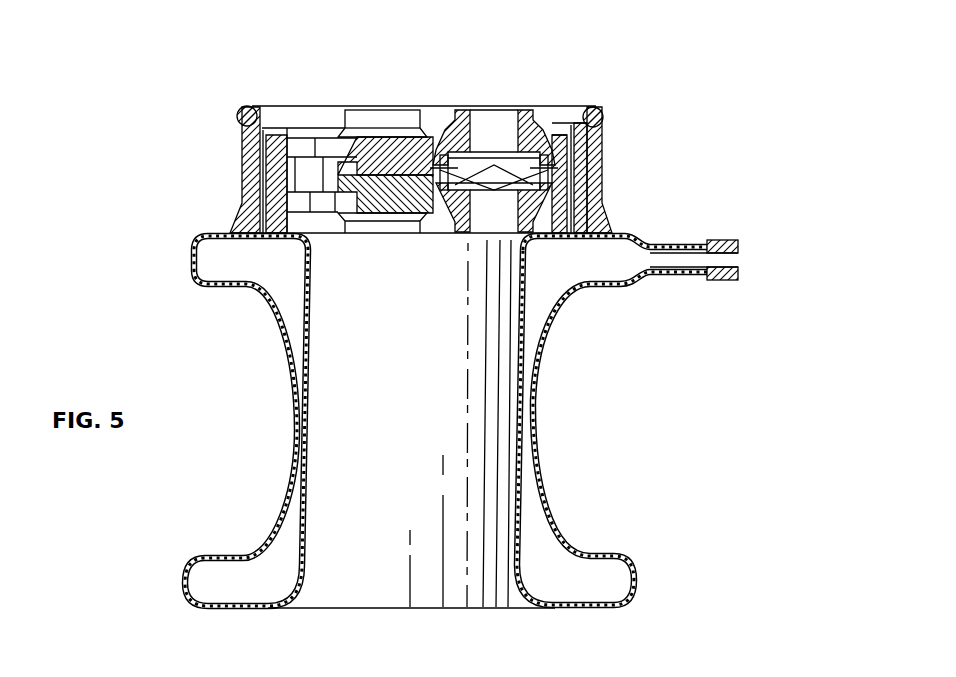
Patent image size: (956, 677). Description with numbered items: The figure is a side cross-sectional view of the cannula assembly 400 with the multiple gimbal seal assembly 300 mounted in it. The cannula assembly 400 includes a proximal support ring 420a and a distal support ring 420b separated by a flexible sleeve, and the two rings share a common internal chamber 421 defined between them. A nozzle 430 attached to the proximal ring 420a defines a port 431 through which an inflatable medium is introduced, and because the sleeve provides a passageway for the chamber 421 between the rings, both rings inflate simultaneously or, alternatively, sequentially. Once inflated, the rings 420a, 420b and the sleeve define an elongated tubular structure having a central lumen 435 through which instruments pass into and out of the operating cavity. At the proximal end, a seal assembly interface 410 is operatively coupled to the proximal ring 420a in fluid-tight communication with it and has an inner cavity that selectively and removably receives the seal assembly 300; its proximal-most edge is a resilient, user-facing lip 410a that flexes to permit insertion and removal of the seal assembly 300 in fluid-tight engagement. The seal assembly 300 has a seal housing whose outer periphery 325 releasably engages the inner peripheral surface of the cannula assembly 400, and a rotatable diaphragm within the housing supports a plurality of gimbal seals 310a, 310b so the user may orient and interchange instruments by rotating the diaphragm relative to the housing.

The multiple gimbal seal assembly 300 is at (504, 100).
The gimbal seal 310a is at (528, 110).
The gimbal seal 310b is at (397, 110).
The outer periphery 325 is at (600, 166).
The cannula assembly 400 is at (695, 100).
The seal assembly interface 410 is at (599, 202).
The user-facing lip 410a is at (251, 104).
The proximal support ring 420a is at (633, 281).
The distal support ring 420b is at (634, 581).
The internal chamber 421 is at (536, 342).
The nozzle 430 is at (724, 240).
The port 431 is at (742, 257).
The central lumen 435 is at (354, 470).